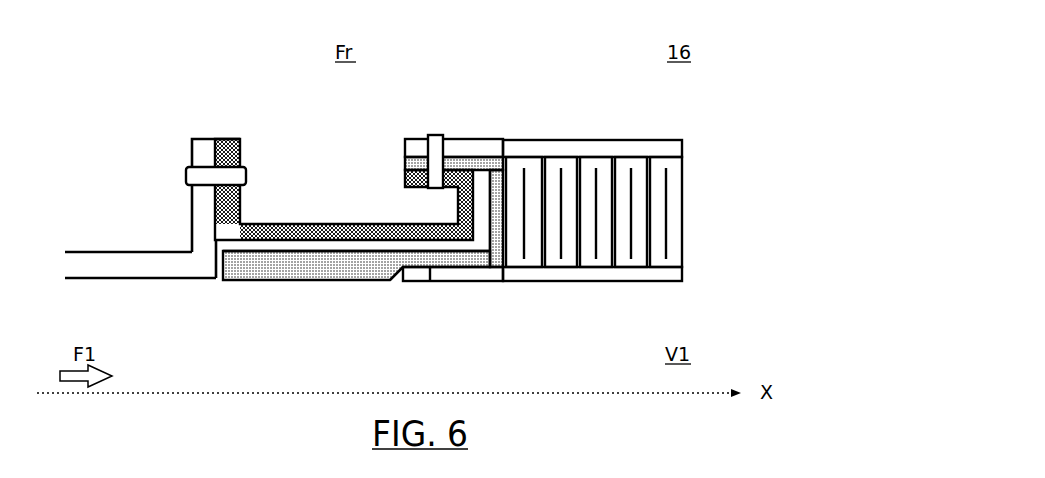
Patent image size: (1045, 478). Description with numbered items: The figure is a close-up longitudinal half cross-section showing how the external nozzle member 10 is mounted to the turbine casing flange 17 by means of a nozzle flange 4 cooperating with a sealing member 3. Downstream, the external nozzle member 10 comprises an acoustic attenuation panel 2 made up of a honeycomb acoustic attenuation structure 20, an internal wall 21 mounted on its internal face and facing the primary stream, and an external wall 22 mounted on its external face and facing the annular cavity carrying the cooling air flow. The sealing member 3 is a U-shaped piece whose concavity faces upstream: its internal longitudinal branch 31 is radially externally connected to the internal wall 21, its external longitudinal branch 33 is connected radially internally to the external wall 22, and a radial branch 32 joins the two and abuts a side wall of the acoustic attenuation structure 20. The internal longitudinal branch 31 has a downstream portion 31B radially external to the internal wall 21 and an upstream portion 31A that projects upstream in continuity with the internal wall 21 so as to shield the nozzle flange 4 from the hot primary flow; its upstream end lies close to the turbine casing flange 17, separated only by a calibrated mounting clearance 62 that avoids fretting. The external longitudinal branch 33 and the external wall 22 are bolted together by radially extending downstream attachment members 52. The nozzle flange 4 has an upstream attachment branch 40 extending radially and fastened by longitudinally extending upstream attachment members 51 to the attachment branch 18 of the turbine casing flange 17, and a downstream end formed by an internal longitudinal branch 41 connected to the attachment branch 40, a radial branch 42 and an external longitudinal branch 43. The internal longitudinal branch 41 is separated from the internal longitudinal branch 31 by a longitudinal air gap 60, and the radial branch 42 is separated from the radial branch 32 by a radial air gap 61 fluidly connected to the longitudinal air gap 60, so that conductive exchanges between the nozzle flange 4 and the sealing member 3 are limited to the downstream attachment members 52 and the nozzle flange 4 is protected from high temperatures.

The acoustic attenuation panel 2 is at (653, 217).
The sealing member 3 is at (363, 315).
The nozzle flange 4 is at (388, 155).
The external nozzle member 10 is at (742, 99).
The turbine casing flange 17 is at (90, 233).
The attachment branch of the turbine casing flange 18 is at (190, 158).
The acoustic attenuation structure 20 is at (758, 143).
The internal wall 21 is at (684, 270).
The external wall 22 is at (684, 147).
The internal longitudinal branch of the sealing member 31 is at (433, 323).
The upstream portion 31A is at (370, 282).
The downstream portion 31B is at (453, 301).
The radial branch of the sealing member 32 is at (506, 228).
The external longitudinal branch of the sealing member 33 is at (497, 153).
The attachment branch of the nozzle flange 40 is at (232, 138).
The internal longitudinal branch of the nozzle flange 41 is at (402, 223).
The radial branch of the nozzle flange 42 is at (473, 192).
The external longitudinal branch of the nozzle flange 43 is at (457, 173).
The upstream attachment members 51 is at (249, 177).
The downstream attachment members 52 is at (432, 133).
The longitudinal air gap 60 is at (250, 246).
The radial air gap 61 is at (481, 243).
The calibrated mounting clearance 62 is at (220, 283).